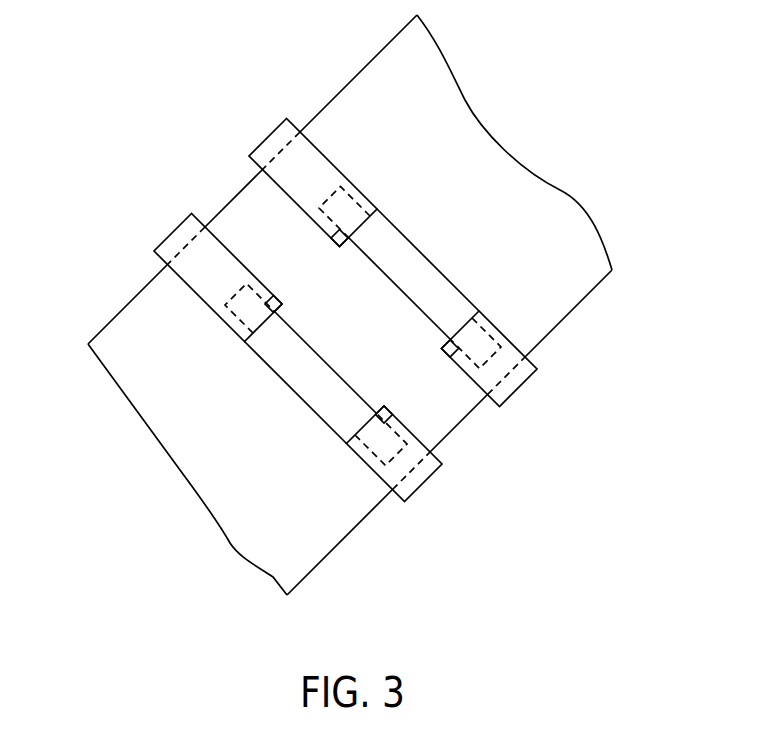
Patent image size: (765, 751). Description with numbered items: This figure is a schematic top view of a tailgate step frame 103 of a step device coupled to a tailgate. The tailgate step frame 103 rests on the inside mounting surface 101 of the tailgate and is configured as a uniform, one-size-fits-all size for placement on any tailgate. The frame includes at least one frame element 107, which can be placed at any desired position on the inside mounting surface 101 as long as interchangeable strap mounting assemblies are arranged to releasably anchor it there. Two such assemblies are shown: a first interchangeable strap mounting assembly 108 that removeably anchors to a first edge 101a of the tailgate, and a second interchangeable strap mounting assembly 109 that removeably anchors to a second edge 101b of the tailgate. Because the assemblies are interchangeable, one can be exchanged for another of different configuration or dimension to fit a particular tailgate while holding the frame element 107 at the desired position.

The inside mounting surface 101 is at (172, 412).
The first edge 101a is at (333, 550).
The second edge 101b is at (108, 322).
The tailgate step frame 103 is at (445, 140).
The frame element 107 is at (418, 285).
The first interchangeable strap mounting assembly 108 is at (513, 383).
The second interchangeable strap mounting assembly 109 is at (313, 170).